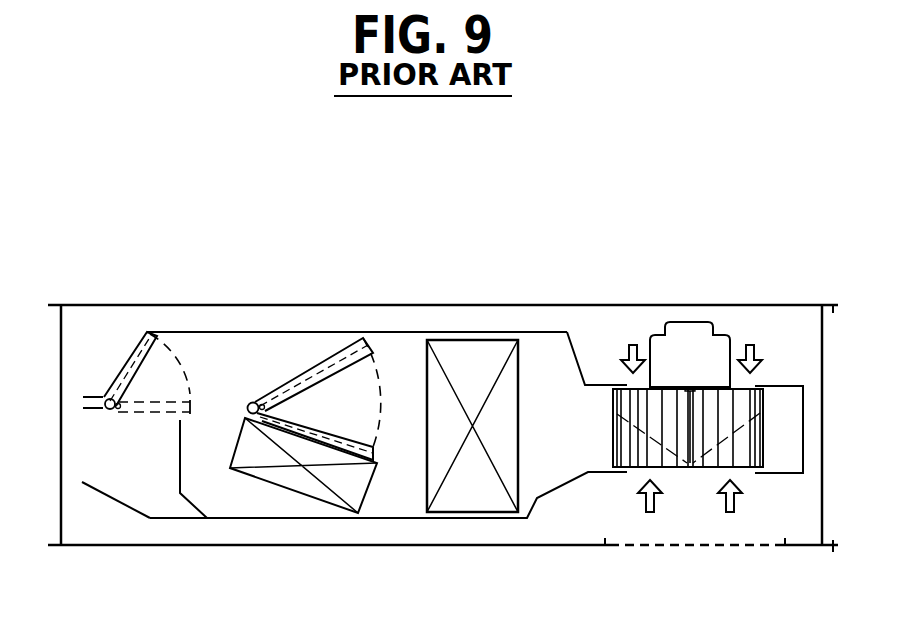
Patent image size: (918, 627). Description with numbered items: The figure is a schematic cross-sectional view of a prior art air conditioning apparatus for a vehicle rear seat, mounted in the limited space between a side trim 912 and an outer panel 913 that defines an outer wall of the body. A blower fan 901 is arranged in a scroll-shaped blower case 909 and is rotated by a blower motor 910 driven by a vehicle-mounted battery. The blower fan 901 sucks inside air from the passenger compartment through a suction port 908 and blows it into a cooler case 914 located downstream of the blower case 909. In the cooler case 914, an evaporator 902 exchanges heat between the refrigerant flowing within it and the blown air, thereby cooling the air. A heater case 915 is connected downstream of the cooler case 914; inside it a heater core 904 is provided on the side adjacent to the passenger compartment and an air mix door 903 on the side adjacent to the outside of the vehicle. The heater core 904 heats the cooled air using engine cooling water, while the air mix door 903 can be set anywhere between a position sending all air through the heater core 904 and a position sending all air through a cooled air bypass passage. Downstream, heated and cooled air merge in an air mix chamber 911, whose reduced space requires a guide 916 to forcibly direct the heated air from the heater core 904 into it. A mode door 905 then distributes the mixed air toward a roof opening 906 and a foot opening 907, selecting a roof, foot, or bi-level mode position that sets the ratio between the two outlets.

The blower fan 901 is at (760, 472).
The evaporator 902 is at (480, 340).
The air mix door 903 is at (293, 338).
The heater core 904 is at (297, 483).
The mode door 905 is at (163, 333).
The roof opening 906 is at (80, 338).
The foot opening 907 is at (85, 460).
The suction port 908 is at (648, 545).
The blower case 909 is at (780, 386).
The blower motor 910 is at (690, 333).
The air mix chamber 911 is at (213, 367).
The side trim 912 is at (402, 545).
The outer panel 913 is at (430, 305).
The cooler case 914 is at (547, 332).
The heater case 915 is at (330, 335).
The guide 916 is at (193, 507).